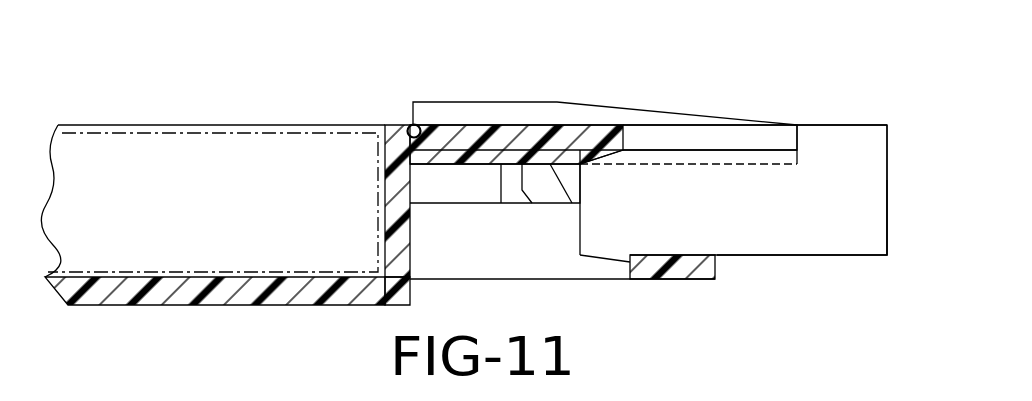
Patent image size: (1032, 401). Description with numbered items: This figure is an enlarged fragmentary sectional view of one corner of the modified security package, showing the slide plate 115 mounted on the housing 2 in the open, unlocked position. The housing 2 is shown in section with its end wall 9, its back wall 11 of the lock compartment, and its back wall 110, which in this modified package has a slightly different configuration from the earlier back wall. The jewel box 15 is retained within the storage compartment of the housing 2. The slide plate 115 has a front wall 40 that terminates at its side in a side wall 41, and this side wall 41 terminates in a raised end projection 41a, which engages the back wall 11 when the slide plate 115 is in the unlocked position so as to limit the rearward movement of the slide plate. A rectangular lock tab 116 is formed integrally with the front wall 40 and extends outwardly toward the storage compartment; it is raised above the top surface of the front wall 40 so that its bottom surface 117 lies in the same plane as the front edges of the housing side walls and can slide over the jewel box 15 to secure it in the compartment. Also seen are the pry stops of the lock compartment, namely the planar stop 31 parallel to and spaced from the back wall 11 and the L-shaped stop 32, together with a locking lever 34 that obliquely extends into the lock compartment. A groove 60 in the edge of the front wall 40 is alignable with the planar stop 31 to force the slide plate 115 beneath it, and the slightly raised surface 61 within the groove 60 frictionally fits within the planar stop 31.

The housing 2 is at (225, 218).
The end wall 9 is at (393, 227).
The back wall 11 is at (690, 274).
The jewel box 15 is at (188, 133).
The planar stop 31 is at (497, 135).
The L-shaped stop 32 is at (463, 182).
The locking lever 34 is at (540, 178).
The front wall 40 is at (713, 208).
The side wall 41 is at (815, 237).
The raised end projection 41a is at (615, 258).
The groove 60 is at (745, 165).
The raised surface 61 is at (676, 135).
The back wall 110 is at (176, 297).
The slide plate 115 is at (897, 183).
The lock tab 116 is at (648, 149).
The bottom surface 117 is at (407, 131).